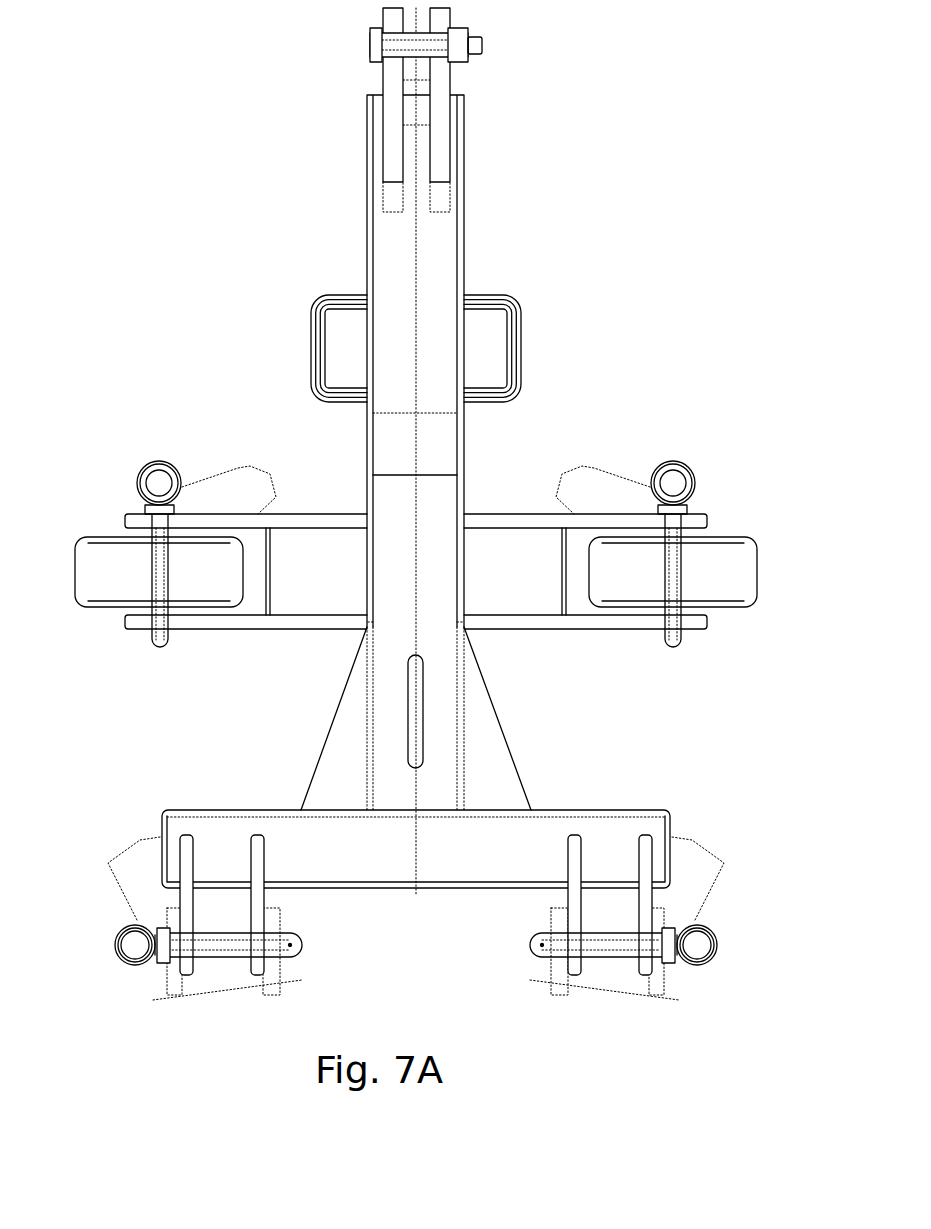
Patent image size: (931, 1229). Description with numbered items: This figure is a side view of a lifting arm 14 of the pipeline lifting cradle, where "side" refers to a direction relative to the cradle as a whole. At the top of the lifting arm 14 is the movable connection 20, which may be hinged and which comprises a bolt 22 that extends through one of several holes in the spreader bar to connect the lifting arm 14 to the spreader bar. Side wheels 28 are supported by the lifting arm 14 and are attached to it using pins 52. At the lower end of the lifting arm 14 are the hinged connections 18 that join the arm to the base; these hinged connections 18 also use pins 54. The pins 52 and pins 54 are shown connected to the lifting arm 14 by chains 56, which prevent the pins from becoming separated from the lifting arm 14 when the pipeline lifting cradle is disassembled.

The lifting arm 14 is at (629, 290).
The hinged connection 18 is at (203, 950).
The movable connection 20 is at (370, 43).
The bolt 22 is at (426, 45).
The side wheel 28 is at (80, 542).
The pin 52 is at (150, 461).
The pin 54 is at (114, 948).
The chain 56 is at (247, 467).